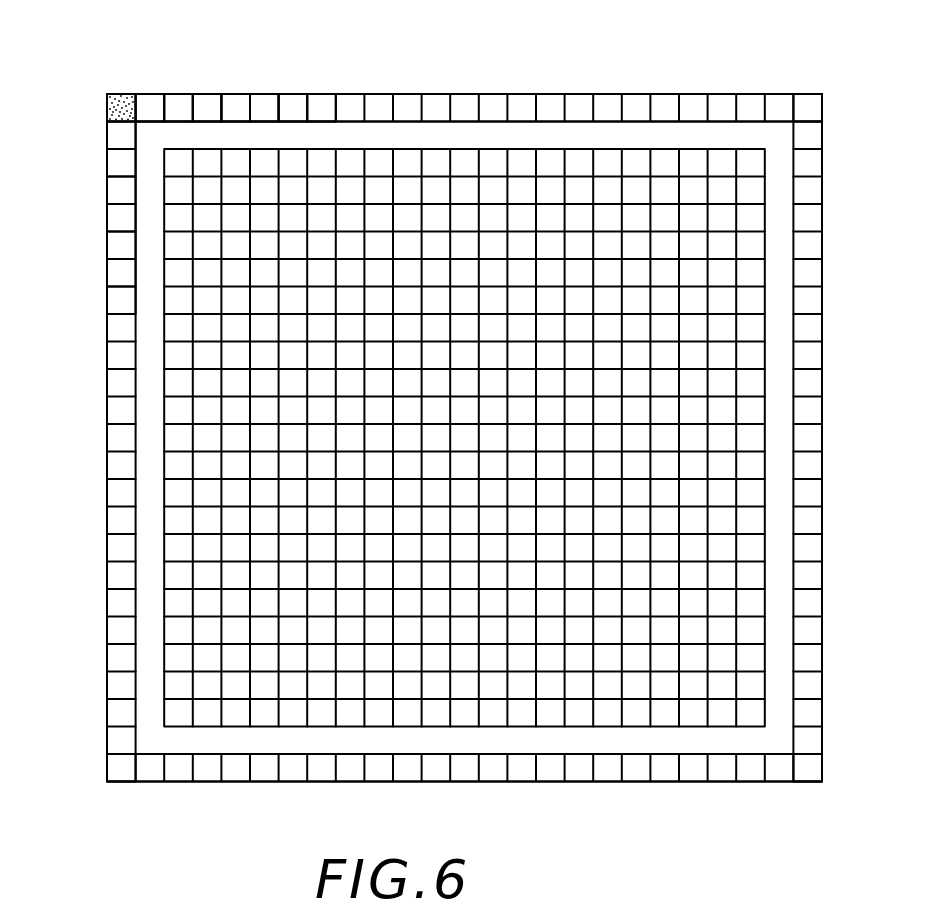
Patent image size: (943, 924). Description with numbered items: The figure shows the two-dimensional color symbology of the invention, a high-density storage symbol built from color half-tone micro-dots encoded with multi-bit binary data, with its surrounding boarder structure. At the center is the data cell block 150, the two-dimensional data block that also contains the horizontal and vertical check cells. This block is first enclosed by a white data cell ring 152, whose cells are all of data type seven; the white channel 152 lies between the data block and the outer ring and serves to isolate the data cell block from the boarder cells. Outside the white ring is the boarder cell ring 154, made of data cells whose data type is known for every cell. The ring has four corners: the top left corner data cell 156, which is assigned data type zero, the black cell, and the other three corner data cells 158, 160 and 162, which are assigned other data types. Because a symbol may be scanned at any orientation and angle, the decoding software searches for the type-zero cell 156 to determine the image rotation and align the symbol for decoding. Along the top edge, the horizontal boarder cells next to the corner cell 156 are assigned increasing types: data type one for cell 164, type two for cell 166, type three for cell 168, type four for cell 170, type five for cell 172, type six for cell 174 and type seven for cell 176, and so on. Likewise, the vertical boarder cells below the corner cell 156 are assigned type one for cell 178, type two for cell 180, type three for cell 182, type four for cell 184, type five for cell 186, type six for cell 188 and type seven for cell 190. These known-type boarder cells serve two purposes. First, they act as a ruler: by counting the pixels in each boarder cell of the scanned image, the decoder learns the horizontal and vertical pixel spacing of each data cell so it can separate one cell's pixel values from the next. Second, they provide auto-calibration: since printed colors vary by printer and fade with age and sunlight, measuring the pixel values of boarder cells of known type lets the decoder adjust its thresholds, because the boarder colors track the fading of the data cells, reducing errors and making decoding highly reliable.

The data cell block 150 is at (495, 158).
The white data cell ring 152 is at (712, 127).
The boarder cell ring 154 is at (465, 769).
The top left corner data cell 156 is at (125, 94).
The corner data cell 158 is at (810, 102).
The corner data cell 160 is at (807, 770).
The corner data cell 162 is at (108, 768).
The horizontal boarder cell 164 is at (148, 102).
The horizontal boarder cell 166 is at (178, 102).
The horizontal boarder cell 168 is at (207, 102).
The horizontal boarder cell 170 is at (235, 102).
The horizontal boarder cell 172 is at (263, 102).
The horizontal boarder cell 174 is at (293, 102).
The horizontal boarder cell 176 is at (318, 102).
The vertical boarder cell 178 is at (108, 134).
The vertical boarder cell 180 is at (108, 162).
The vertical boarder cell 182 is at (108, 190).
The vertical boarder cell 184 is at (118, 217).
The vertical boarder cell 186 is at (108, 245).
The vertical boarder cell 188 is at (108, 272).
The vertical boarder cell 190 is at (108, 300).